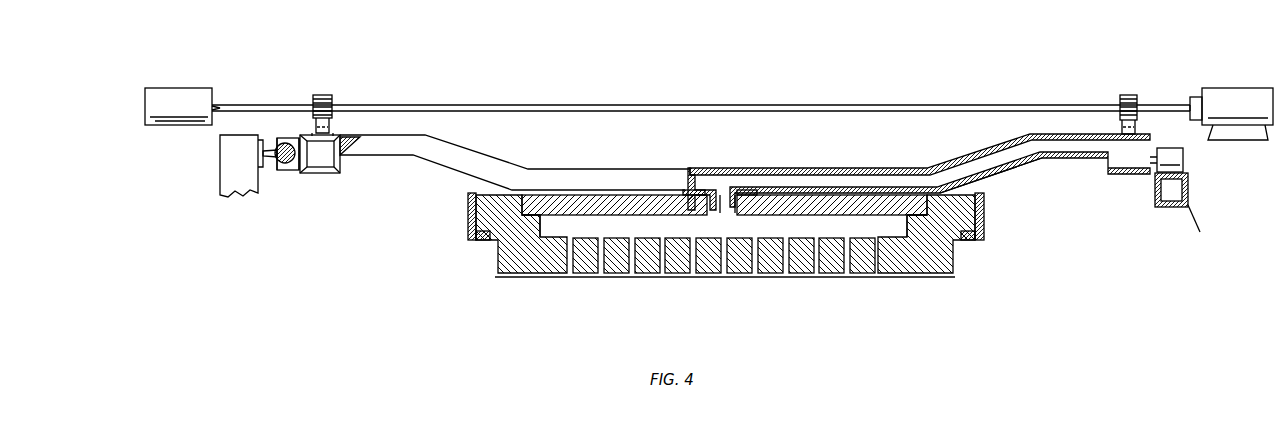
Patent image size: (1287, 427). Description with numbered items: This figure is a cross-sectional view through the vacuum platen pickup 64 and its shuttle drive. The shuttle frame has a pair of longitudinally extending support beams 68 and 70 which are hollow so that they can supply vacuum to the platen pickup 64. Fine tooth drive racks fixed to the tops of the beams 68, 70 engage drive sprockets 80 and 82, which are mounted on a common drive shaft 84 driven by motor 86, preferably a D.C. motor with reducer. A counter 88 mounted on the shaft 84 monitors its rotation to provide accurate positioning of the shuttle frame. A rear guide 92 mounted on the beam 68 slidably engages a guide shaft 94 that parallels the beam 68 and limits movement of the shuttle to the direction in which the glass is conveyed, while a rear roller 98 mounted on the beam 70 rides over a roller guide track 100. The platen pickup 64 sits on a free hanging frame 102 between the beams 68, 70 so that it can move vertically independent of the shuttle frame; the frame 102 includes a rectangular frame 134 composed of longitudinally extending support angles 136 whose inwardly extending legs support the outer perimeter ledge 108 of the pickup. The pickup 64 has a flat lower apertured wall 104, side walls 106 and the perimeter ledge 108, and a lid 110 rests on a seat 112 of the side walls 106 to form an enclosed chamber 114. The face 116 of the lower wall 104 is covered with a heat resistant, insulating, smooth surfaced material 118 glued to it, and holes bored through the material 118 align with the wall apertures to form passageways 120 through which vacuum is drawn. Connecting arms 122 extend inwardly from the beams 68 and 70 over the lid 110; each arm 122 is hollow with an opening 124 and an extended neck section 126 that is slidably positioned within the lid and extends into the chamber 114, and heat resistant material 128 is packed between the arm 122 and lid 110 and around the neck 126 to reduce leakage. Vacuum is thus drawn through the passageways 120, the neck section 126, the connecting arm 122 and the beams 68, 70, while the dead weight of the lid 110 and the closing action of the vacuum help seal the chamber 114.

The vacuum platen pickup 64 is at (962, 196).
The support beam 68 is at (322, 174).
The support beam 70 is at (1196, 230).
The drive sprocket 80 is at (322, 94).
The drive sprocket 82 is at (1128, 95).
The drive shaft 84 is at (418, 104).
The motor 86 is at (1235, 88).
The counter 88 is at (186, 88).
The rear guide 92 is at (296, 171).
The guide shaft 94 is at (283, 160).
The rear roller 98 is at (1183, 152).
The roller guide track 100 is at (1185, 173).
The free hanging frame 102 is at (985, 212).
The lower apertured wall 104 is at (936, 278).
The side walls 106 is at (545, 222).
The outer perimeter ledge 108 is at (485, 240).
The lid 110 is at (594, 194).
The seat 112 is at (913, 220).
The chamber 114 is at (812, 228).
The face 116 is at (586, 246).
The insulating material 118 is at (650, 246).
The passageways 120 is at (697, 244).
The connecting arm 122 is at (462, 146).
The opening 124 is at (724, 193).
The neck section 126 is at (712, 190).
The heat resistant material 128 is at (753, 195).
The rectangular frame 134 is at (468, 200).
The longitudinally extending support angle 136 is at (476, 236).